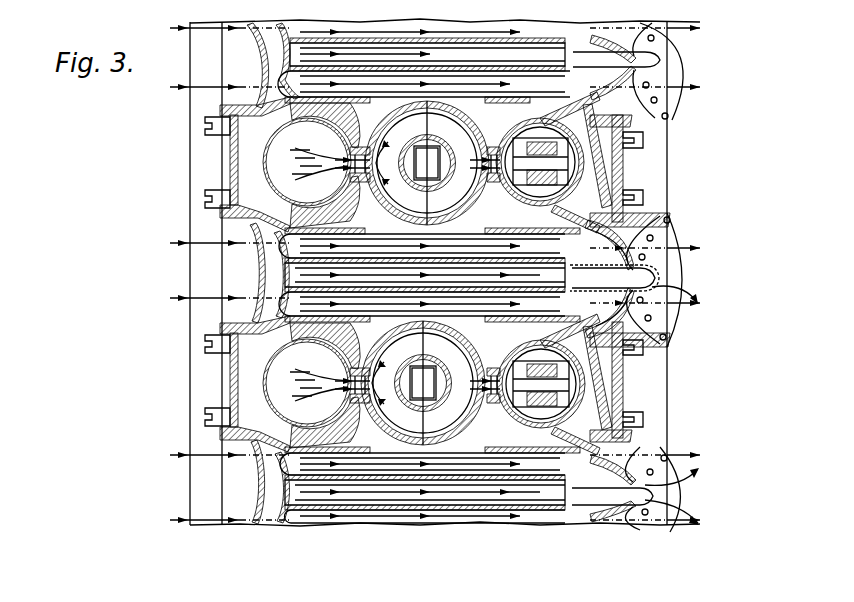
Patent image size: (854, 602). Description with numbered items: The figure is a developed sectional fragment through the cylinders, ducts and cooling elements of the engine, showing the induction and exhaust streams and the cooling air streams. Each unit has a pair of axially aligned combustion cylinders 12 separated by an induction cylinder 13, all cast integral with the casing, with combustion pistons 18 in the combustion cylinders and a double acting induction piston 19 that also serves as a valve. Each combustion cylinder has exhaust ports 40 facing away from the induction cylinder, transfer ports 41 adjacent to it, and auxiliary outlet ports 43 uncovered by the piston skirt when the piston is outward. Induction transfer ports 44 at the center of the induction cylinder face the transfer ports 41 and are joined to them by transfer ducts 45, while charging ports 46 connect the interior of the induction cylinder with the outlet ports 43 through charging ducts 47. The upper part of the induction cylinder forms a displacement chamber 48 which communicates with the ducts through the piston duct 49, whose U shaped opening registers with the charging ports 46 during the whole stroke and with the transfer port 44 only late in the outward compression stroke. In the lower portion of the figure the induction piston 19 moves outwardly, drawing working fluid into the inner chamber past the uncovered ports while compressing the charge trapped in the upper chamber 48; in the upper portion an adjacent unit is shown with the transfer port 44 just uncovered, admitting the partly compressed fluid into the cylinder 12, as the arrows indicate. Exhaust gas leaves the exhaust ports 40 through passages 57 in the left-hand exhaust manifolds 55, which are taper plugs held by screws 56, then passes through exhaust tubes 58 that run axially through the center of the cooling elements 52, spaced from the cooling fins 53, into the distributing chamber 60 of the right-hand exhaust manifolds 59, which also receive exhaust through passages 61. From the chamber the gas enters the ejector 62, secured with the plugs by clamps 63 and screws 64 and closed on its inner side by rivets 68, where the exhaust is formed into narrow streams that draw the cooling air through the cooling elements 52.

The combustion cylinder 12 is at (277, 368).
The induction cylinder 13 is at (446, 423).
The combustion piston 18 is at (277, 392).
The induction piston 19 is at (405, 440).
The exhaust port 40 is at (295, 392).
The transfer port 41 is at (348, 170).
The outlet port 43 is at (644, 489).
The induction transfer port 44 is at (412, 162).
The transfer duct 45 is at (360, 145).
The intake or charging port 46 is at (386, 352).
The intake or charging duct 47 is at (490, 366).
The displacement chamber 48 is at (390, 396).
The piston duct 49 is at (390, 400).
The pipe 52 is at (352, 232).
The cooling fin 53 is at (458, 252).
The exhaust manifold 55 is at (240, 220).
The screw 56 is at (222, 207).
The exhaust passage 57 is at (262, 258).
The exhaust tube 58 is at (362, 262).
The exhaust manifold 59 is at (643, 213).
The exhaust gas distributing chamber 60 is at (568, 272).
The passage 61 is at (590, 300).
The exhaust gas ejector 62 is at (660, 238).
The clamp 63 is at (660, 222).
The screw 64 is at (640, 360).
The rivet 68 is at (652, 318).